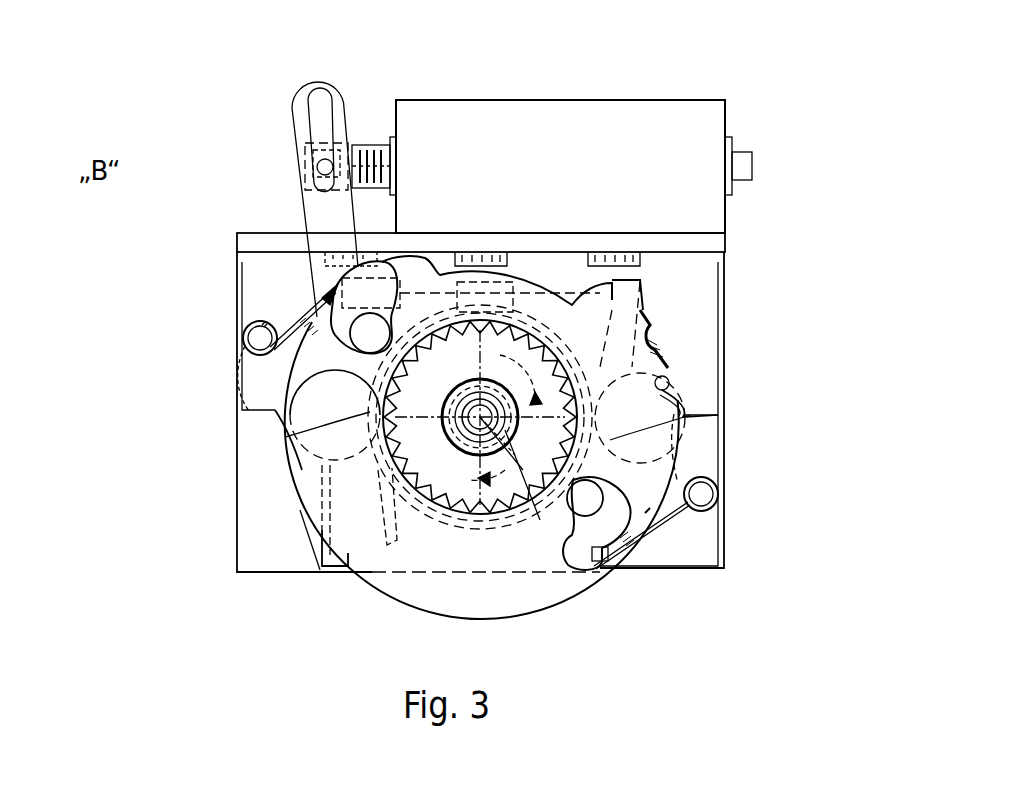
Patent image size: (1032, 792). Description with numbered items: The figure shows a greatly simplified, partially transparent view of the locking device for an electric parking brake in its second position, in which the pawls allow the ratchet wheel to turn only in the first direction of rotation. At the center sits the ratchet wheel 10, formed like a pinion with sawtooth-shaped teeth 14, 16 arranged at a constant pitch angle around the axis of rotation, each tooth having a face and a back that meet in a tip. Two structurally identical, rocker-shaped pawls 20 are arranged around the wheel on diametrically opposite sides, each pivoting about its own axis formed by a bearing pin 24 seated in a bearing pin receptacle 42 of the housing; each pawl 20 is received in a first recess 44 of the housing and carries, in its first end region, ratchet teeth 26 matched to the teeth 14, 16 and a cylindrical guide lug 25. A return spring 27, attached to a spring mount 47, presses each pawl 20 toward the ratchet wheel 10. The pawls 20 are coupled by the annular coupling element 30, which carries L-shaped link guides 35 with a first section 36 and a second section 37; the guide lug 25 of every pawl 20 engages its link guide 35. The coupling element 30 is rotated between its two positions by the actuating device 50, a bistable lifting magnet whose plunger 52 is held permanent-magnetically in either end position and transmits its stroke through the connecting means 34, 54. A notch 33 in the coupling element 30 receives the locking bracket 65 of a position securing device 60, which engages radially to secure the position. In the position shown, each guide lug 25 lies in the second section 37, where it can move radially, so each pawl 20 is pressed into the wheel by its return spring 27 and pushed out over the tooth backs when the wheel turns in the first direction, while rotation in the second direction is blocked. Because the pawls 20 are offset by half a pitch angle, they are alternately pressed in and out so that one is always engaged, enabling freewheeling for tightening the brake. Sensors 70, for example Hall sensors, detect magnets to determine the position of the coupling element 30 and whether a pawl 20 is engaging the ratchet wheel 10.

The ratchet wheel 10 is at (360, 436).
The teeth 14 is at (352, 422).
The teeth 16 is at (455, 433).
The pawl 20 is at (262, 338).
The bearing pin 24 is at (275, 413).
The guide lug 25 is at (318, 313).
The ratchet teeth 26 is at (335, 400).
The return spring 27 is at (308, 326).
The coupling element 30 is at (430, 607).
The notch 33 is at (700, 385).
The connecting means 34 is at (300, 162).
The link guide 35 is at (336, 338).
The first section 36 is at (575, 553).
The second section 37 is at (650, 508).
The bearing pin receptacle 42 is at (285, 435).
The first recess 44 is at (328, 574).
The spring mount 47 is at (243, 337).
The actuating device 50 is at (662, 100).
The plunger 52 is at (377, 144).
The connecting means 54 is at (330, 140).
The position securing device 60 is at (757, 321).
The locking bracket 65 is at (655, 325).
The sensor 70 is at (487, 262).